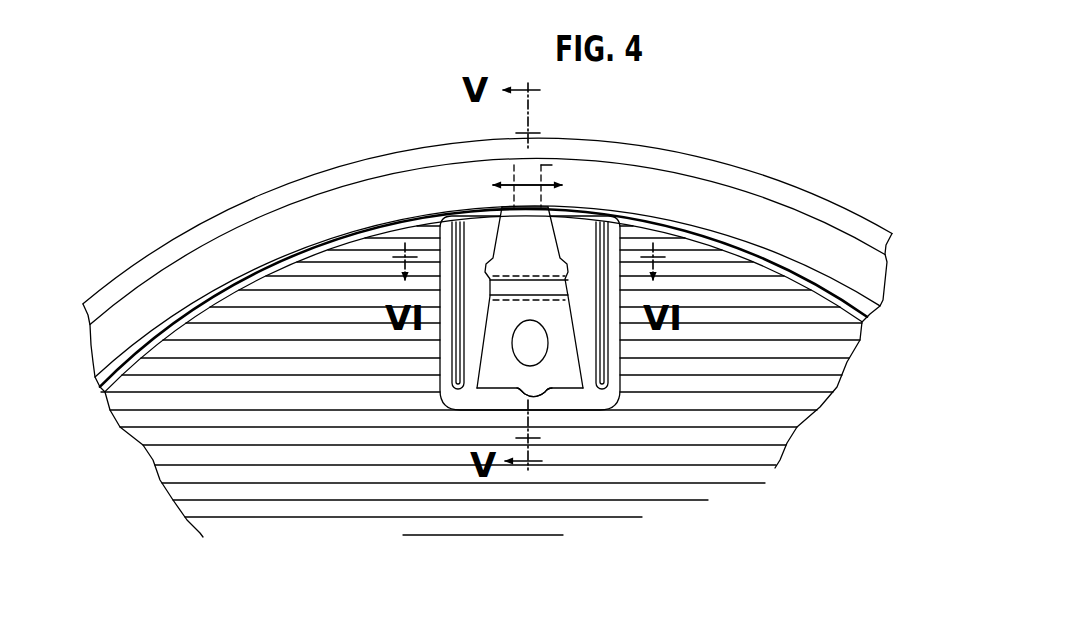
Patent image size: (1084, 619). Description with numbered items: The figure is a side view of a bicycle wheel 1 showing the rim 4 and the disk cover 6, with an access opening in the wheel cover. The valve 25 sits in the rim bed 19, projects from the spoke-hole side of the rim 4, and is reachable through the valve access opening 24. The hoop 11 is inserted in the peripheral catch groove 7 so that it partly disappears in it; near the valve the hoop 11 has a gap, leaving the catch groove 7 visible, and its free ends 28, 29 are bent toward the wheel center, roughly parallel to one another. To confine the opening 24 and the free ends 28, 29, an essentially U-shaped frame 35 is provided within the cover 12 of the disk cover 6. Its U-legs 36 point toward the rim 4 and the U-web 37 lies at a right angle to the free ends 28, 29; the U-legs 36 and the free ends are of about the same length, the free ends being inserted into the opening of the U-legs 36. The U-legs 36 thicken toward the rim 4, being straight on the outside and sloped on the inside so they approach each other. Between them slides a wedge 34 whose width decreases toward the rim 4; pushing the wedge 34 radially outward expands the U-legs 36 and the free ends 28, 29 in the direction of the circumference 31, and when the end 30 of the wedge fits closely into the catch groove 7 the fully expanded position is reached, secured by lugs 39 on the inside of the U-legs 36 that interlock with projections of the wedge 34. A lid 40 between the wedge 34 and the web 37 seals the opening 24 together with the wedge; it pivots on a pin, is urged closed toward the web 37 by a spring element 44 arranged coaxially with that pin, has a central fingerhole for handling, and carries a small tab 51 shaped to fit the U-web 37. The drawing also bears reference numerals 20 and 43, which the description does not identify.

The bicycle wheel 1 is at (226, 174).
The rim 4 is at (840, 190).
The disk cover 6 is at (216, 434).
The peripheral catch groove 7 is at (460, 207).
The hoop 11 is at (690, 224).
The cover 12 is at (240, 311).
The rim bed 19 is at (853, 224).
The roof edge panel 20 is at (758, 215).
The valve access opening 24 is at (470, 398).
The valve 25 is at (546, 165).
The free end of the hoop 28 is at (453, 334).
The free end of the hoop 29 is at (604, 334).
The end of the wedge 30 is at (563, 252).
The circumference 31 is at (525, 183).
The wedge 34 is at (490, 234).
The U-shaped frame 35 is at (422, 396).
The U-legs 36 is at (453, 358).
The U-web 37 is at (568, 386).
The lugs 39 is at (631, 225).
The lid 40 is at (542, 360).
The body bottom 43 is at (552, 390).
The spring element 44 is at (605, 386).
The small tab 51 is at (522, 392).